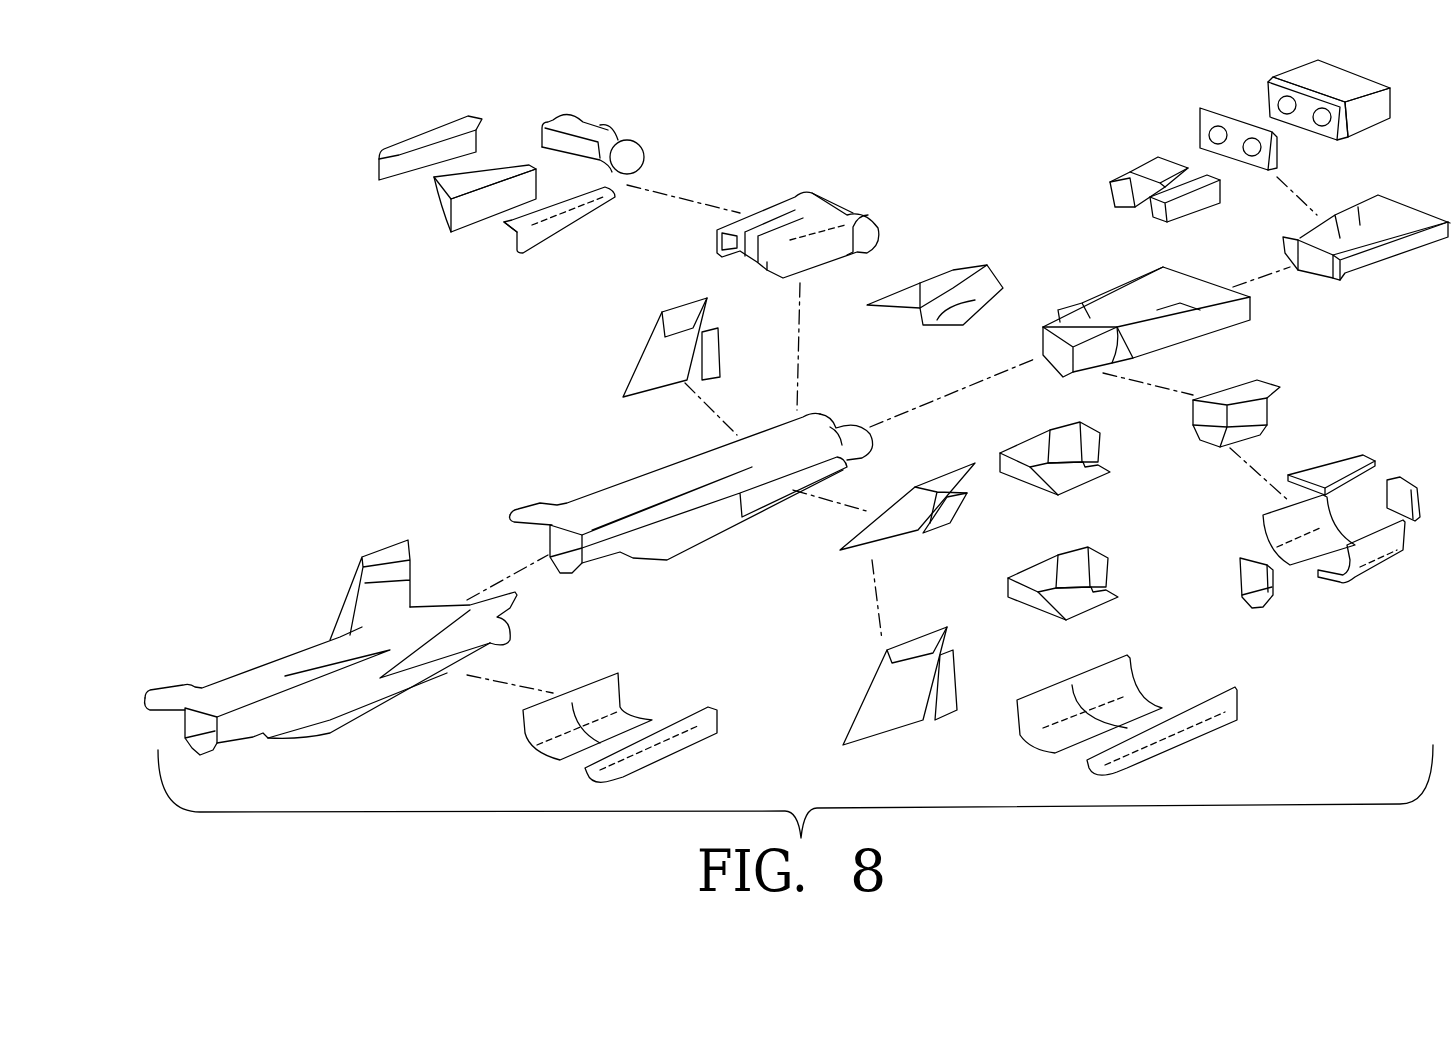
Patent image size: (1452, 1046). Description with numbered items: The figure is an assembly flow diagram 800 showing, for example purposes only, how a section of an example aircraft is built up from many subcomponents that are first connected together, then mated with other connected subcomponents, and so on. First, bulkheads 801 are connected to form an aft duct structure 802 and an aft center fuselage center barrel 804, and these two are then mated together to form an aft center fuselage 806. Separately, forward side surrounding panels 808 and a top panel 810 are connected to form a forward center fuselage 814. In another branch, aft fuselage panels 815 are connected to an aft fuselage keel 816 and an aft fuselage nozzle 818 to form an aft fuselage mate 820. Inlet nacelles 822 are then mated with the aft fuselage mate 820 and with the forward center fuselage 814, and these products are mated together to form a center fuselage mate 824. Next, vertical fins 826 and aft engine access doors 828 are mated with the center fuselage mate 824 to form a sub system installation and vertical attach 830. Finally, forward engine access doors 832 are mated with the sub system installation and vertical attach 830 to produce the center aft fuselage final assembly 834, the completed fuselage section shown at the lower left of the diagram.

The exploded model kit assembly 800 is at (356, 319).
The bulkheads 801 is at (1198, 118).
The aft duct structure 802 is at (1267, 78).
The aft center fuselage center barrel 804 is at (1108, 187).
The aft center fuselage 806 is at (1387, 202).
The forward side surrounding panels 808 is at (1418, 487).
The top panel 810 is at (1367, 457).
The forward center fuselage 814 is at (1268, 383).
The aft fuselage panels 815 is at (400, 147).
The aft fuselage keel 816 is at (460, 217).
The aft fuselage nozzle 818 is at (570, 118).
The aft fuselage mate 820 is at (785, 205).
The inlet nacelles 822 is at (983, 265).
The center fuselage mate 824 is at (1097, 298).
The vertical fins 826 is at (640, 361).
The aft engine access doors 828 is at (1185, 713).
The sub system installation and vertical attach 830 is at (615, 490).
The forward engine access doors 832 is at (668, 722).
The center aft fuselage final assembly 834 is at (250, 670).